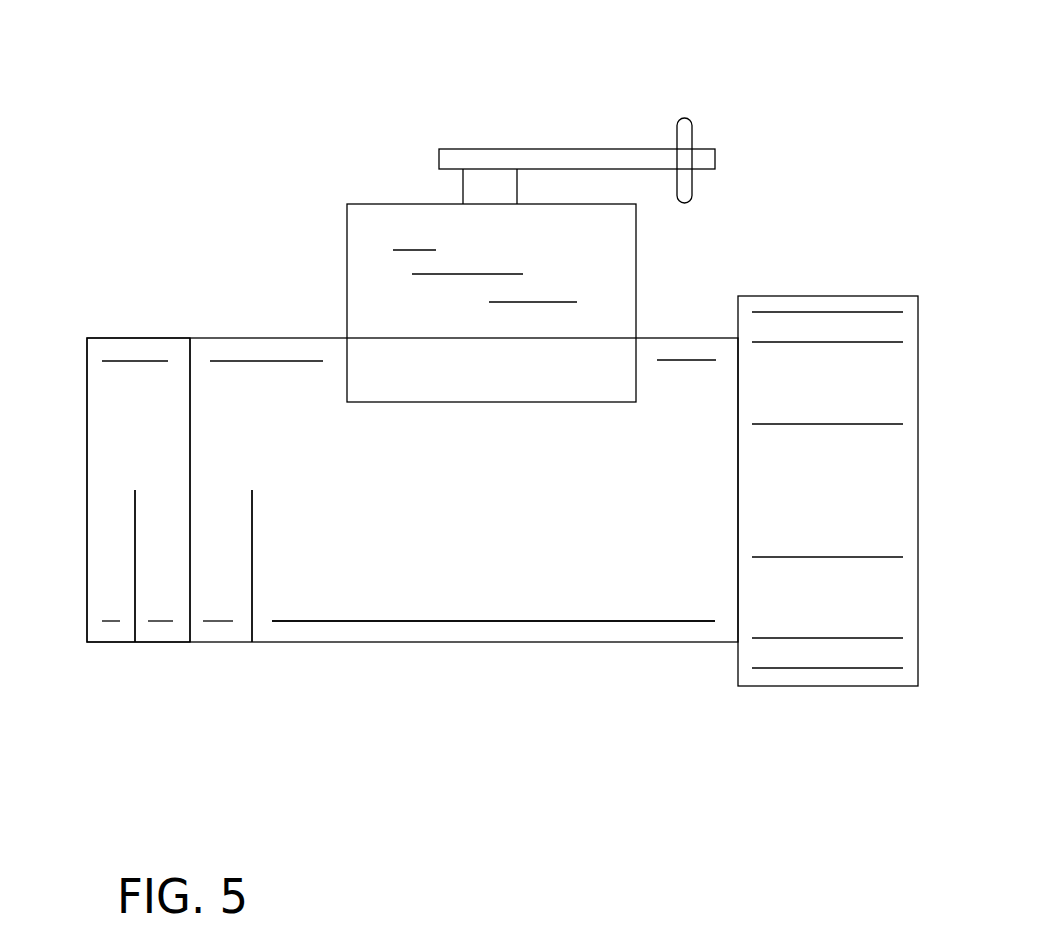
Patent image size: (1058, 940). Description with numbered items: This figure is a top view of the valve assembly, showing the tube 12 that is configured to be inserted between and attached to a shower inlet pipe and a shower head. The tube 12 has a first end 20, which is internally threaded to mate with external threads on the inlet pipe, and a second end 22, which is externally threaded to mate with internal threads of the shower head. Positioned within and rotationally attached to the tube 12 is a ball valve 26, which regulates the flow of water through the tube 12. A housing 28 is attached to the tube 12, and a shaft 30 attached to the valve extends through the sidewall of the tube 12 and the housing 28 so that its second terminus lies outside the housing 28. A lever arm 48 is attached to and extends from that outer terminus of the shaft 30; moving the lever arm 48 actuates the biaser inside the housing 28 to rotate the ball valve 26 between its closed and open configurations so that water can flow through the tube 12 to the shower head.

The tube 12 is at (132, 326).
The first end 20 is at (927, 406).
The second end 22 is at (79, 454).
The ball valve 26 is at (500, 536).
The housing 28 is at (334, 247).
The shaft 30 is at (490, 170).
The lever arm 48 is at (575, 144).